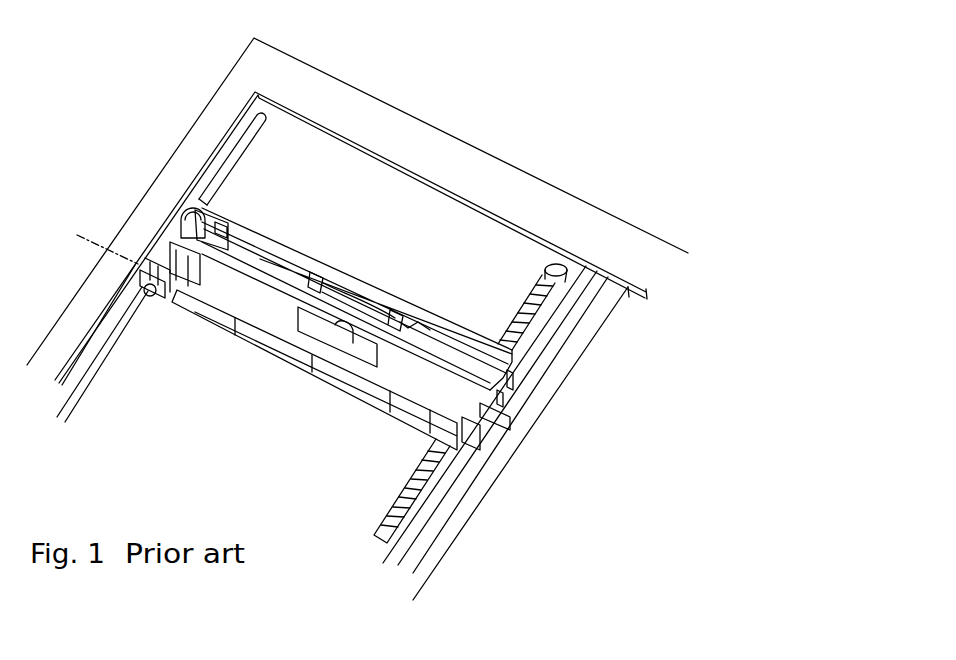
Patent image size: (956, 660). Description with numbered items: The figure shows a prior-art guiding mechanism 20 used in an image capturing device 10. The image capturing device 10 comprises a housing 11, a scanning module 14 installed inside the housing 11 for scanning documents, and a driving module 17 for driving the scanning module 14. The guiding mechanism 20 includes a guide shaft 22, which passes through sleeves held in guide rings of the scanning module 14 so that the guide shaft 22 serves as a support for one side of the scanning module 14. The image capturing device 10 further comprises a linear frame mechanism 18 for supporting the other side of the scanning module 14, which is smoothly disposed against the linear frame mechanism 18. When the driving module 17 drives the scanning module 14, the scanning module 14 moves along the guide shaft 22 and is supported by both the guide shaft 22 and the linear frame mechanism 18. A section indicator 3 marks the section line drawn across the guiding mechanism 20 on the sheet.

The image capturing device 10 is at (345, 316).
The housing 11 is at (235, 93).
The scanning module 14 is at (348, 302).
The driving module 17 is at (546, 275).
The linear frame mechanism 18 is at (542, 373).
The guiding mechanism 20 is at (115, 291).
The guide shaft 22 is at (113, 333).
The section line 3- 3 is at (87, 226).